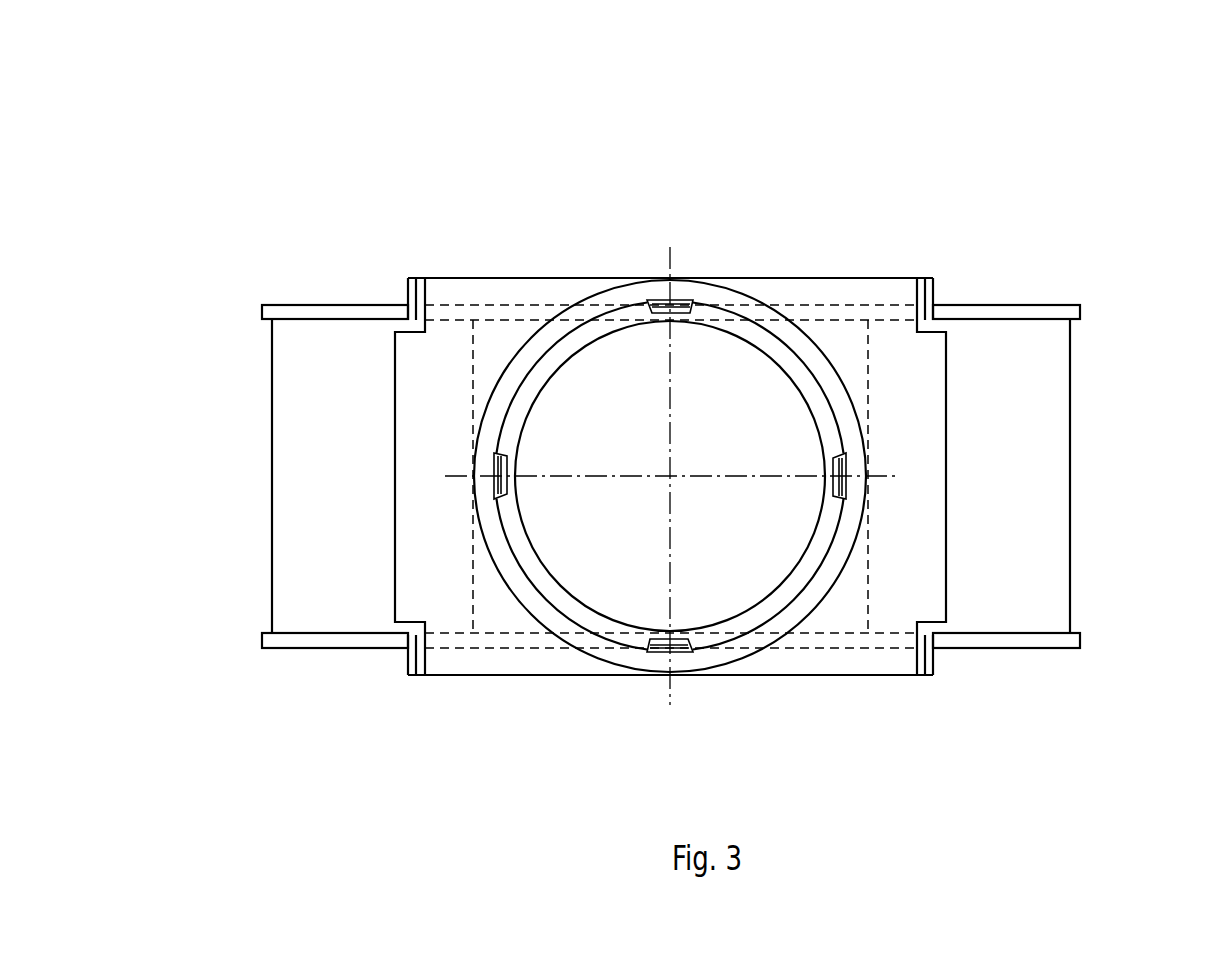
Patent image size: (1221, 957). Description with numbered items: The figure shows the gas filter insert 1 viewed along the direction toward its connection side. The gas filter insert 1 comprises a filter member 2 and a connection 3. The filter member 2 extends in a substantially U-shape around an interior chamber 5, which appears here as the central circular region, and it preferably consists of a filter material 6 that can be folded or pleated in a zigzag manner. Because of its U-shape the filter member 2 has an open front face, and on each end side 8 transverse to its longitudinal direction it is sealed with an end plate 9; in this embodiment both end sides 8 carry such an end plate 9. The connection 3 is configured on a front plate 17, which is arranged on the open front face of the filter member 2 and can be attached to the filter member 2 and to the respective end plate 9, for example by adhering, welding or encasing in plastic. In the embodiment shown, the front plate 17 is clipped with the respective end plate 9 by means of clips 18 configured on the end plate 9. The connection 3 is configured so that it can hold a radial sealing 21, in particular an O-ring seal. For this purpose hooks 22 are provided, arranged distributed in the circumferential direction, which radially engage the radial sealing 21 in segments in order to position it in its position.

The gas filter insert 1 is at (893, 183).
The filter member 2 is at (300, 528).
The connection 3 is at (575, 295).
The interior chamber 5 is at (728, 429).
The filter material 6 is at (290, 407).
The end side 8 is at (973, 318).
The end plate 9 is at (1045, 308).
The front plate 17 is at (910, 572).
The clips 18 is at (412, 293).
The radial sealing 21 is at (796, 590).
The hooks 22 is at (690, 300).